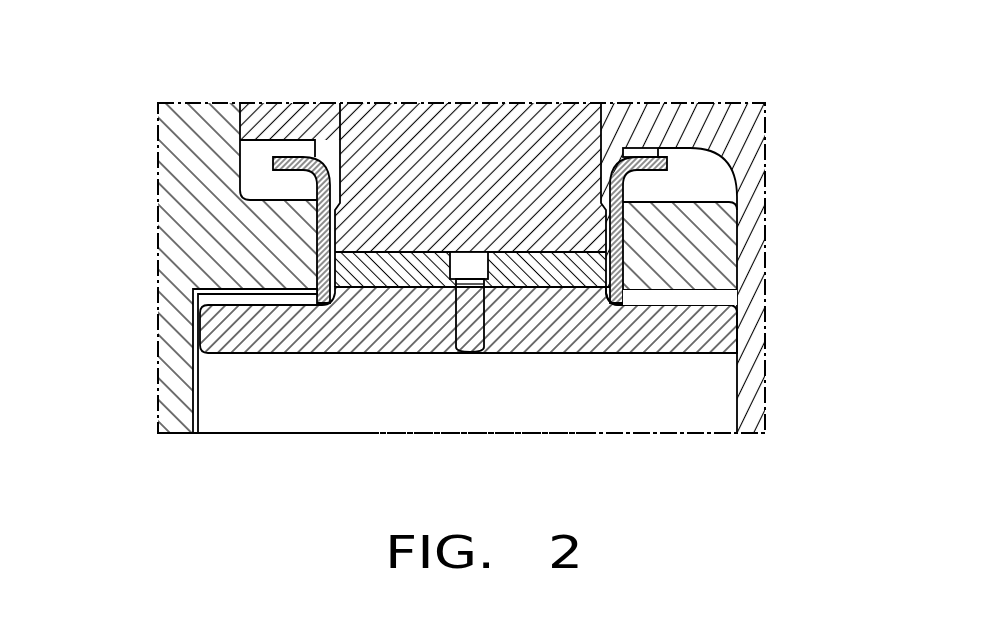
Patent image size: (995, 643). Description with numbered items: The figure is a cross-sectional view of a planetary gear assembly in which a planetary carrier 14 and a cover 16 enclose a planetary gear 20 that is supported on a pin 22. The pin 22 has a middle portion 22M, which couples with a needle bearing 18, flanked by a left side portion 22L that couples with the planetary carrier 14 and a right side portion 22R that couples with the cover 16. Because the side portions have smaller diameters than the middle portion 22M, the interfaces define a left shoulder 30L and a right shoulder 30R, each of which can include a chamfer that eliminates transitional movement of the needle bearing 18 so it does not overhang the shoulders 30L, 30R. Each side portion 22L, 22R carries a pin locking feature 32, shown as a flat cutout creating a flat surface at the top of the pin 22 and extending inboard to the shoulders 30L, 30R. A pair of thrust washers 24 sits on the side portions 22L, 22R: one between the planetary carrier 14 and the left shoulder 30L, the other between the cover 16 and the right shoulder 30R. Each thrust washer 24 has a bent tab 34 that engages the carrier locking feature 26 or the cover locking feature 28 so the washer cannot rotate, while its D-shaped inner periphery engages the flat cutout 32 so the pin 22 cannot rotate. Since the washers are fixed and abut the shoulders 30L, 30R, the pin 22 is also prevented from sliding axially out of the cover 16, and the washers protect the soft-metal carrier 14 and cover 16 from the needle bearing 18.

The planetary carrier 14 is at (167, 147).
The cover 16 is at (737, 243).
The needle bearing 18 is at (515, 246).
The planetary gear 20 is at (340, 112).
The pin 22 is at (199, 409).
The left side portion 22L is at (253, 435).
The middle portion 22M is at (464, 435).
The right side portion 22R is at (705, 435).
The thrust washer 24 is at (315, 266).
The carrier locking feature 26 is at (265, 137).
The cover locking feature 28 is at (644, 146).
The left shoulder 30L is at (338, 302).
The right shoulder 30R is at (604, 302).
The pin locking feature 32 is at (232, 303).
The tab 34 is at (290, 171).